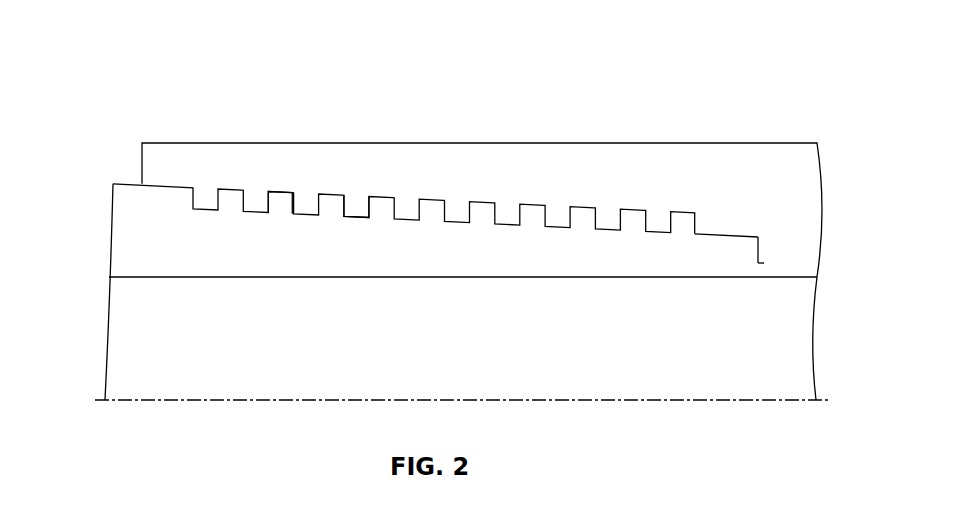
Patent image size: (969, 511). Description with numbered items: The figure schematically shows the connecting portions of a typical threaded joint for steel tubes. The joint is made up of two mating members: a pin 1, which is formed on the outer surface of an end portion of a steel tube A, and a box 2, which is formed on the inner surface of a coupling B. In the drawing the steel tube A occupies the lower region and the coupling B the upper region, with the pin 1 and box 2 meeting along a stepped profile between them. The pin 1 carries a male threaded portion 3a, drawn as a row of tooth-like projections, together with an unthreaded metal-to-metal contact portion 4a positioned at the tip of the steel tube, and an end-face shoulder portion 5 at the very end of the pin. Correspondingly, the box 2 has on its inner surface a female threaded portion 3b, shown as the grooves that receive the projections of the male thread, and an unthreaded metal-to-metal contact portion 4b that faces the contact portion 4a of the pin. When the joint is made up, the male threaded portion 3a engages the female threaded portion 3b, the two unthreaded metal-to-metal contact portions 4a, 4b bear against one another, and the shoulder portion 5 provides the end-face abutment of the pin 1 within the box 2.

The pin 1 is at (101, 233).
The box 2 is at (606, 118).
The male threaded portion 3a is at (283, 191).
The female threaded portion 3b is at (356, 218).
The unthreaded metal-to-metal contact portion 4a is at (717, 237).
The unthreaded metal-to-metal contact portion 4b is at (733, 238).
The shoulder portion 5 is at (764, 263).
The steel tube A is at (158, 381).
The coupling B is at (466, 52).